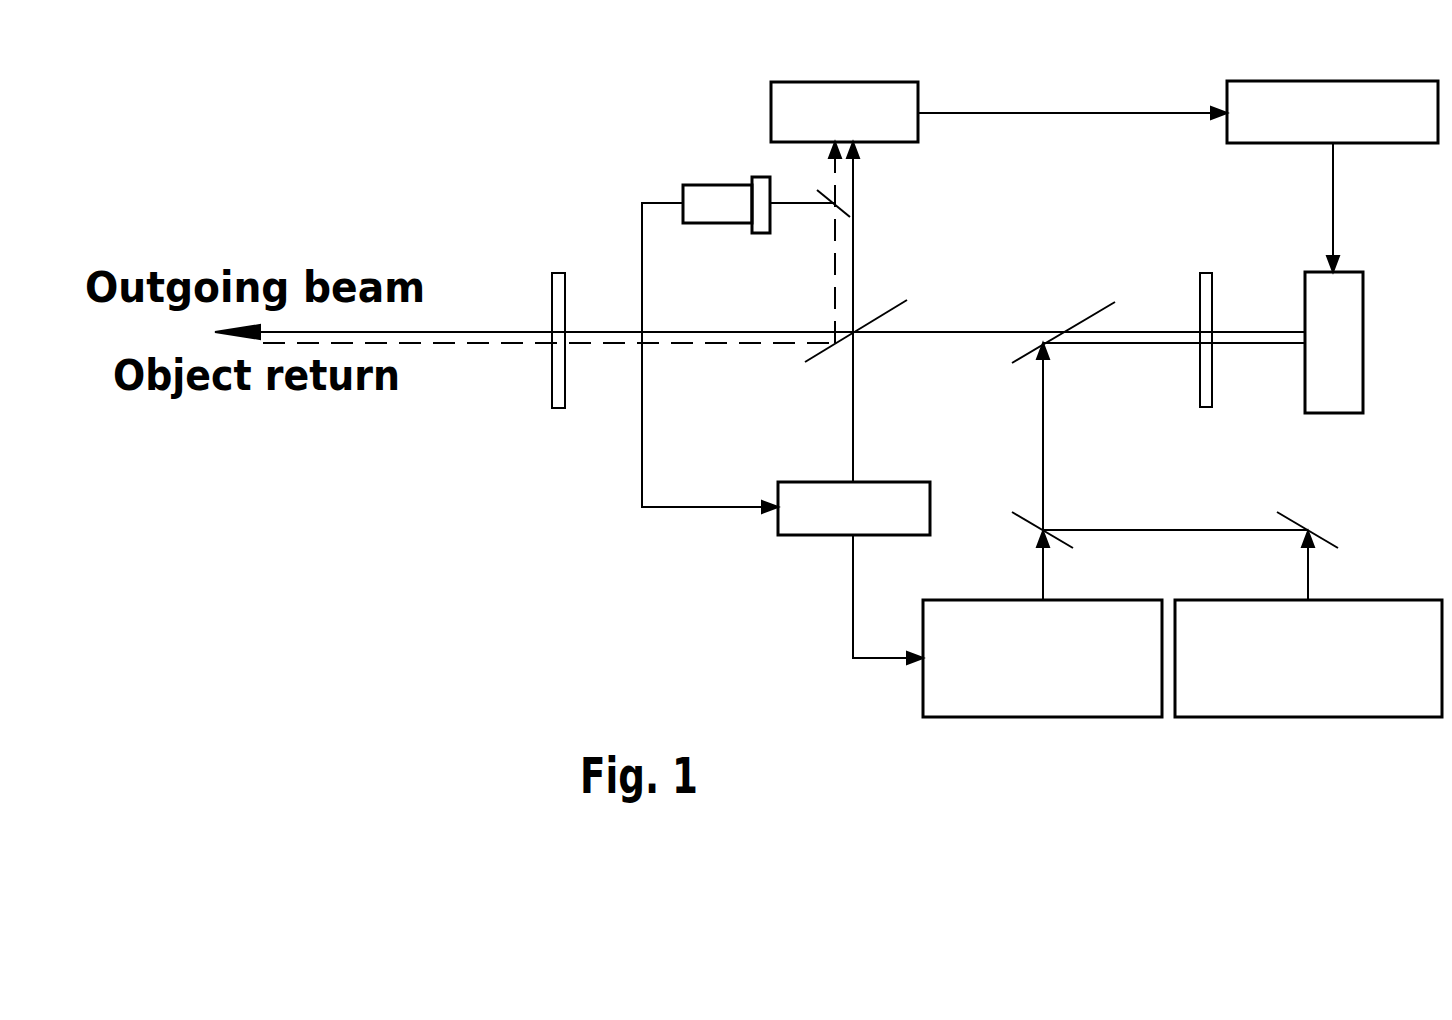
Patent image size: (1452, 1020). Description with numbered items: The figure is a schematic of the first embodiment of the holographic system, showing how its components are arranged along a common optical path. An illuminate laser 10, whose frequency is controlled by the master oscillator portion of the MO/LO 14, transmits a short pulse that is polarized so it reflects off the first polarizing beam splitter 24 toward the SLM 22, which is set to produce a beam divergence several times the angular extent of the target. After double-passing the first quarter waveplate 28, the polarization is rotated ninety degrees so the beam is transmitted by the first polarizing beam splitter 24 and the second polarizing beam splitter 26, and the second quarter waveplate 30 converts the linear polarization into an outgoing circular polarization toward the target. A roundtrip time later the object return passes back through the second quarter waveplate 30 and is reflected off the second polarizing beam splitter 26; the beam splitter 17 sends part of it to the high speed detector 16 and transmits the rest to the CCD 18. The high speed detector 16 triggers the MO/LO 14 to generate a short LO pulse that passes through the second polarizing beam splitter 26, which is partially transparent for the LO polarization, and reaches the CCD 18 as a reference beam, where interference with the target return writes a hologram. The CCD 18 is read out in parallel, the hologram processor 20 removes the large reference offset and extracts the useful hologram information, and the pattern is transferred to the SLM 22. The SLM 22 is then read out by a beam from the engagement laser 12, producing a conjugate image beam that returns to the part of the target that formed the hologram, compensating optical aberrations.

The illuminate laser 10 is at (982, 600).
The engagement laser 12 is at (1390, 600).
The master oscillator/local oscillator (MO/LO) 14 is at (803, 537).
The high speed detector (PD) 16 is at (712, 185).
The beam splitter (BS) 17 is at (840, 195).
The charge-coupled device (CCD) 18 is at (771, 112).
The hologram processor 20 is at (1258, 145).
The spatial light modulator (SLM) 22 is at (1305, 400).
The polarizing beam splitter PBS1 24 is at (1080, 320).
The polarizing beam splitter PBS2 26 is at (818, 355).
The quarter waveplate QWP1 28 is at (1200, 380).
The quarter waveplate QWP2 30 is at (552, 368).